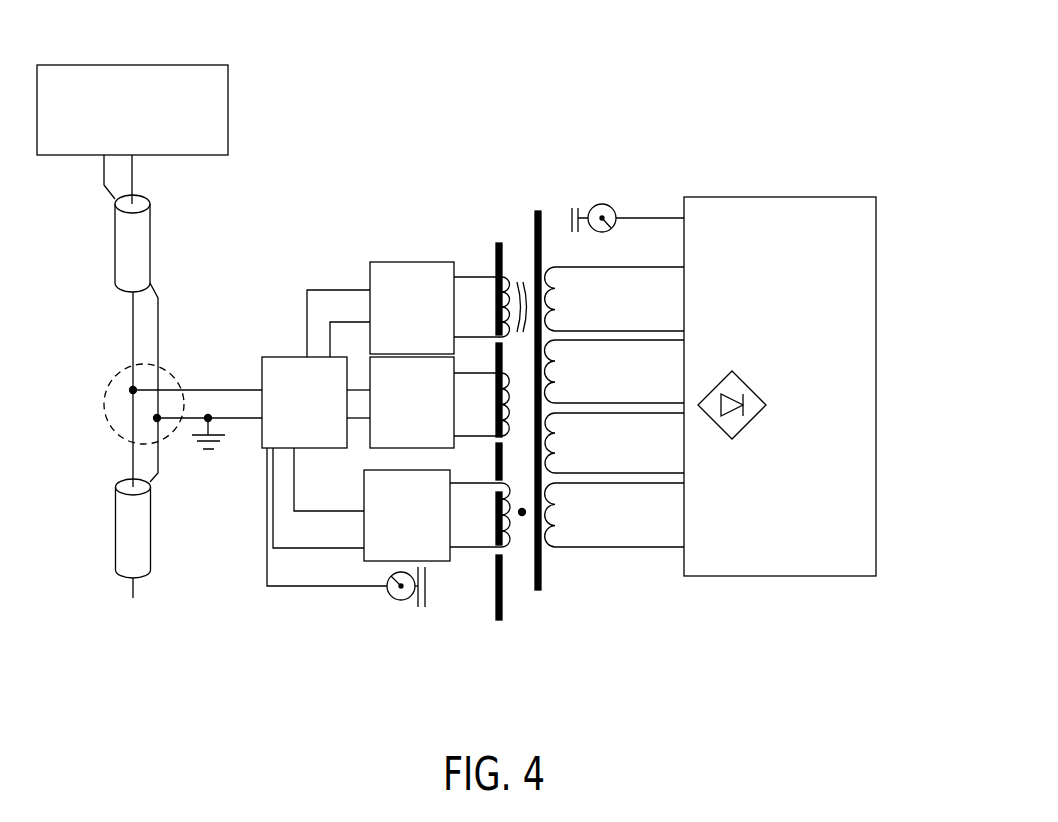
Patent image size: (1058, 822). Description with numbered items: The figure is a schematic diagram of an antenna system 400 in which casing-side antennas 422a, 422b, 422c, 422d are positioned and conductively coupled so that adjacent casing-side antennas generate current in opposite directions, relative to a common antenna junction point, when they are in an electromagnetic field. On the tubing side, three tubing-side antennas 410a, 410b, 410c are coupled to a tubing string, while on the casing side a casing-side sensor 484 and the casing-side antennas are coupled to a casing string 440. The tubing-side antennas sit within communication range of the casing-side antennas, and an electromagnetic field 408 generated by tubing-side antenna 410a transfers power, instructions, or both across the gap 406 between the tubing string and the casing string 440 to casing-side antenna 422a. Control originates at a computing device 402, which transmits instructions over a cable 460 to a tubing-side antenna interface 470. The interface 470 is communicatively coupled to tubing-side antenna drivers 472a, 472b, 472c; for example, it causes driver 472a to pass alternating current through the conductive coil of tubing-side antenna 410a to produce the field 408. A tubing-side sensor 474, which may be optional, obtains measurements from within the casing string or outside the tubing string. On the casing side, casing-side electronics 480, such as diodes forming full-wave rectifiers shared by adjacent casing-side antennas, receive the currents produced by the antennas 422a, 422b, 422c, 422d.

The antenna system 400 is at (633, 106).
The computing device 402 is at (117, 87).
The gap 406 is at (522, 516).
The electromagnetic field 408 is at (524, 270).
The tubing-side antenna 410a is at (503, 280).
The tubing-side antenna 410b is at (503, 403).
The tubing-side antenna 410c is at (505, 552).
The casing-side antenna 422a is at (673, 300).
The casing-side antenna 422b is at (673, 360).
The casing-side antenna 422c is at (673, 455).
The casing-side antenna 422d is at (673, 537).
The casing string 440 is at (540, 212).
The cable 460 is at (115, 249).
The tubing-side antenna interface 470 is at (295, 372).
The tubing-side antenna driver 472a is at (386, 270).
The tubing-side antenna driver 472b is at (383, 392).
The tubing-side antenna driver 472c is at (376, 553).
The tubing-side sensor 474 is at (401, 601).
The casing-side electronics 480 is at (857, 342).
The casing-side sensor 484 is at (603, 204).